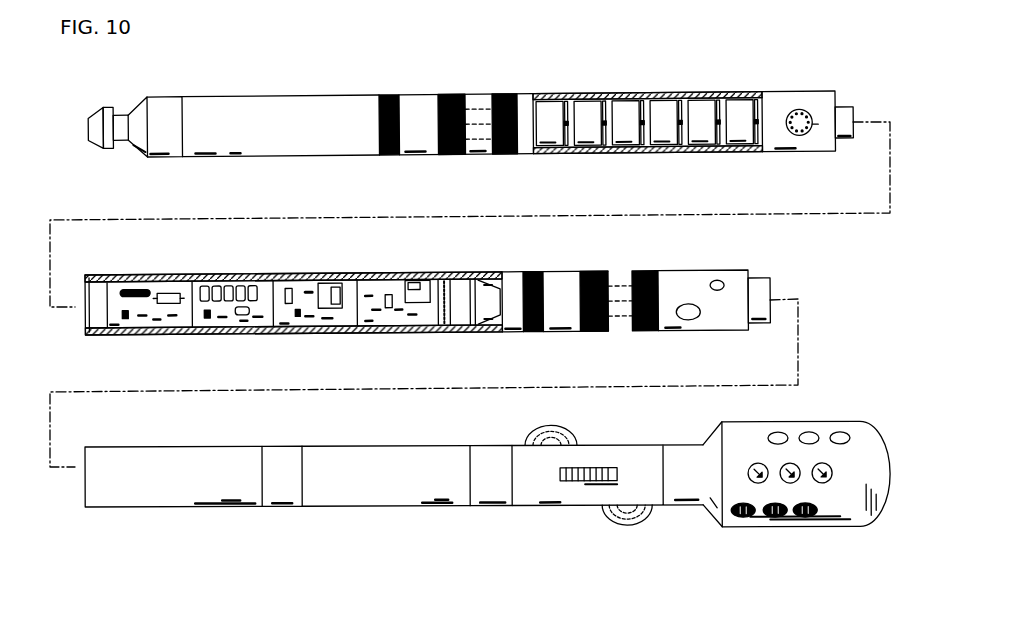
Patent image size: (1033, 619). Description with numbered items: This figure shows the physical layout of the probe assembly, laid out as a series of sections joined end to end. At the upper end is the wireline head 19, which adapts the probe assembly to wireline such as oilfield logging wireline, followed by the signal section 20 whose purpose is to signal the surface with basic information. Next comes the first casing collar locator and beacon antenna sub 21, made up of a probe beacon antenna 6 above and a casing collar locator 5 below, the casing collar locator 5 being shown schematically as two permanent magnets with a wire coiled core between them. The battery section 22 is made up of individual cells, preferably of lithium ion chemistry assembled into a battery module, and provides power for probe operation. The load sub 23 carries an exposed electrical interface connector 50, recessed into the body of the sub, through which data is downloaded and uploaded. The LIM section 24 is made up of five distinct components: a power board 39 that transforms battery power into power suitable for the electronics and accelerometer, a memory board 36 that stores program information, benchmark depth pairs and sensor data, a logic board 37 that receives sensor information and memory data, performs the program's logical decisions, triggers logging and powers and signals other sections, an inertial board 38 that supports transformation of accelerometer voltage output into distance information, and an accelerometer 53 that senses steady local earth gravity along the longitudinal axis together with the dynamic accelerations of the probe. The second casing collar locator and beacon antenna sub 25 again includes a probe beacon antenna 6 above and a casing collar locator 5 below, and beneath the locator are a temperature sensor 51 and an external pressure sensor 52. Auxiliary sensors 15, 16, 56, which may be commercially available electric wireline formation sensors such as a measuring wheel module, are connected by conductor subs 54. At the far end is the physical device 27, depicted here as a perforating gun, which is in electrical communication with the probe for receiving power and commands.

The wireline head 19 is at (158, 97).
The signal section 20 is at (277, 97).
The probe beacon antenna 6 is at (393, 97).
The casing collar locator 5 is at (482, 97).
The first casing collar locator and beacon antenna sub 21 is at (427, 163).
The battery section 22 is at (670, 93).
The load sub 23 is at (807, 92).
The electrical interface connector 50 is at (803, 135).
The power board 39 is at (128, 275).
The memory board 36 is at (218, 275).
The logic board 37 is at (303, 275).
The inertial board 38 is at (385, 274).
The accelerometer 53 is at (468, 274).
The LIM section 24 is at (283, 338).
The second casing collar locator and beacon antenna sub 25 is at (565, 335).
The temperature sensor 51 is at (725, 278).
The external pressure sensor 52 is at (697, 318).
The auxiliary sensor 15 is at (168, 447).
The conductor sub 54 is at (282, 447).
The auxiliary sensor 16 is at (360, 445).
The auxiliary sensor 56 is at (587, 445).
The physical device 27 is at (805, 422).